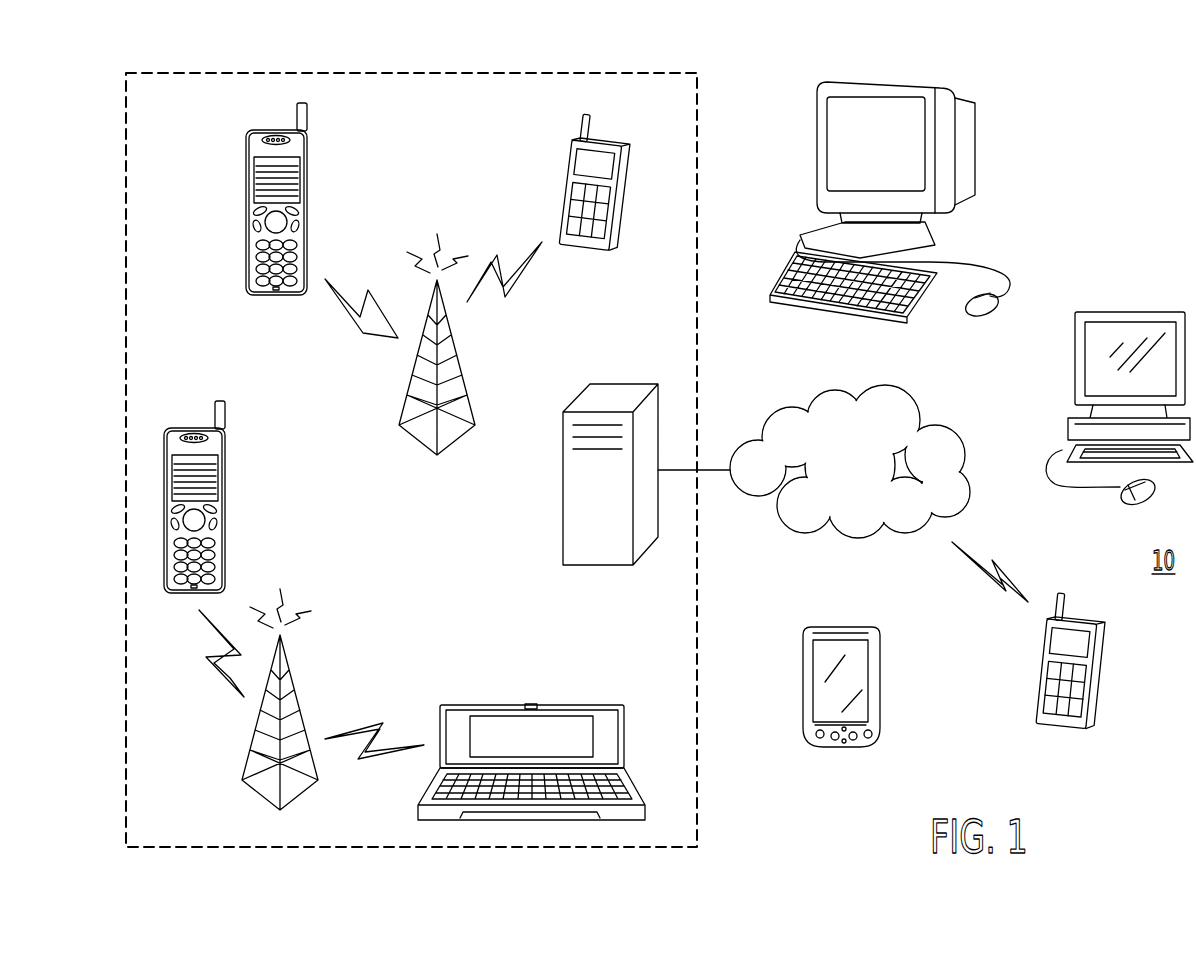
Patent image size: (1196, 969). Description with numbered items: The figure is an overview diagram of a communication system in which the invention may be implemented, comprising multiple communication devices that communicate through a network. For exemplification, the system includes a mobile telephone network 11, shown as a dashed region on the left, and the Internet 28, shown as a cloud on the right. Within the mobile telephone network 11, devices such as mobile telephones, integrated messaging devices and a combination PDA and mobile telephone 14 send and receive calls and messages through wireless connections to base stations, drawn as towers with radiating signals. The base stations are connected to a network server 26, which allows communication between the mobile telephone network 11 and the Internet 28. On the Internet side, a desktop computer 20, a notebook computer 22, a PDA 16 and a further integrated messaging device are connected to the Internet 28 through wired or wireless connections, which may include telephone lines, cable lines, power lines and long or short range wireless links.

The mobile telephone network 11 is at (168, 116).
The combination PDA and mobile telephone 14 is at (531, 704).
The PDA 16 is at (882, 683).
The desktop computer 20 is at (975, 133).
The notebook computer 22 is at (1130, 312).
The network server 26 is at (563, 487).
The Internet 28 is at (893, 398).